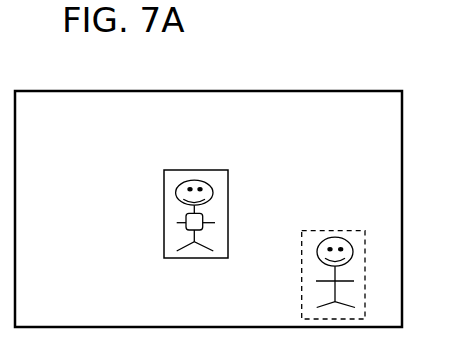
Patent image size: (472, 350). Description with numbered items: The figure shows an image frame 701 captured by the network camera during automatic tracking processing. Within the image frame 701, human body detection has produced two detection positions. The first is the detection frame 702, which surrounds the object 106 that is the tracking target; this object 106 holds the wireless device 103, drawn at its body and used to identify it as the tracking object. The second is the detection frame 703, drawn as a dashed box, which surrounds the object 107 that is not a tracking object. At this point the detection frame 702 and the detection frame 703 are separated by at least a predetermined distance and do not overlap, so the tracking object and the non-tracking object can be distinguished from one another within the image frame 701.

The image frame 701 is at (321, 91).
The detection frame 702 is at (207, 170).
The detection frame 703 is at (348, 231).
The object 106 is at (213, 193).
The wireless device 103 is at (205, 227).
The object 107 is at (353, 253).